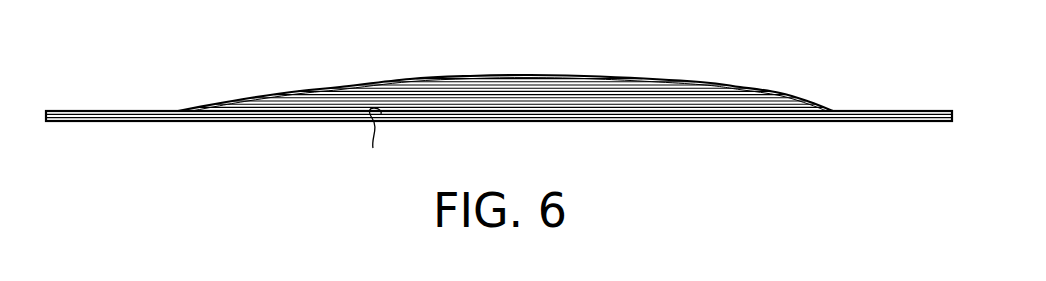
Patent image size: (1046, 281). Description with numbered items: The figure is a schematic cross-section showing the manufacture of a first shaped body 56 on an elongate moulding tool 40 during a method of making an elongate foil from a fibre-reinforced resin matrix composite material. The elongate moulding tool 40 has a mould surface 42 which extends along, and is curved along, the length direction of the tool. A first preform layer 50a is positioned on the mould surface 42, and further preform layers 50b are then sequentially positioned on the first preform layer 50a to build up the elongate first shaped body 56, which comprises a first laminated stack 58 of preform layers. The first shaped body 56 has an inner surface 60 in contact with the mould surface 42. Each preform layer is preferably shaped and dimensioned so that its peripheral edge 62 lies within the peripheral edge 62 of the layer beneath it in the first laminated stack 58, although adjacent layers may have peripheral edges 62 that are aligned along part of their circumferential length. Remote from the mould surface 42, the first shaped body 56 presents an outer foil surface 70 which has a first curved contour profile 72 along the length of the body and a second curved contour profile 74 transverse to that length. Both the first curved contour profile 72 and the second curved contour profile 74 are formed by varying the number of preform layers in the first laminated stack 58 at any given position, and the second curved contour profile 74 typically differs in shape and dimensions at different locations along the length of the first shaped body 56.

The elongate moulding tool 40 is at (499, 115).
The mould surface 42 is at (374, 143).
The first preform layer 50a is at (147, 108).
The further preform layers 50b is at (505, 65).
The first shaped body 56 is at (340, 83).
The first laminated stack 58 is at (473, 102).
The inner surface 60 is at (273, 123).
The peripheral edge 62 is at (712, 87).
The outer foil surface 70 is at (532, 73).
The first curved contour profile 72 is at (410, 80).
The second curved contour profile 74 is at (612, 77).